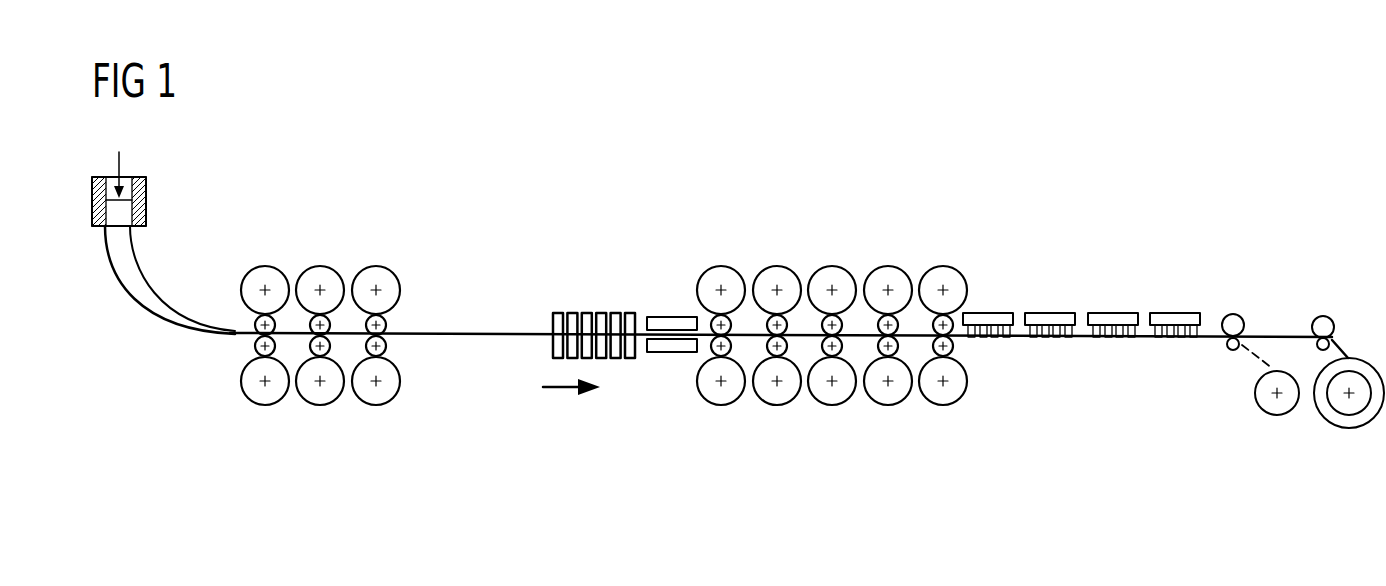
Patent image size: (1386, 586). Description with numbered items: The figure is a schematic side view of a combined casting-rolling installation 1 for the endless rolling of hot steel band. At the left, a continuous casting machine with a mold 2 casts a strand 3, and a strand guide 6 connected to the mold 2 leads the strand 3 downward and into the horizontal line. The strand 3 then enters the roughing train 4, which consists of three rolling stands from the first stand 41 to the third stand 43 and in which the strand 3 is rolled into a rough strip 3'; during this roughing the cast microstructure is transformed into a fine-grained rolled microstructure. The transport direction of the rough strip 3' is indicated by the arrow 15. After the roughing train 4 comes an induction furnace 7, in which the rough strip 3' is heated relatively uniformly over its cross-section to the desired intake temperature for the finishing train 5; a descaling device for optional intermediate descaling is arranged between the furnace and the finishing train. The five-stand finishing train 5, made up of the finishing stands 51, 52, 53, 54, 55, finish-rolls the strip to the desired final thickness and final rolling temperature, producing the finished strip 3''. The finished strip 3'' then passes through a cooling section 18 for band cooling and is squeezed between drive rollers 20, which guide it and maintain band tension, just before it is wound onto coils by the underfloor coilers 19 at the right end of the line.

The combined casting-rolling installation 1 is at (550, 170).
The mold 2 is at (153, 200).
The strand 3 is at (718, 281).
The rough strip 3' is at (471, 375).
The finished strip 3'' is at (982, 385).
The roughing train 4 is at (332, 245).
The first rolling stand of the roughing train 41 is at (268, 397).
The third rolling stand of the roughing train 43 is at (379, 397).
The finishing train 5 is at (845, 233).
The first finishing stand 51 is at (724, 397).
The second finishing stand 52 is at (780, 397).
The third finishing stand 53 is at (835, 397).
The fourth finishing stand 54 is at (891, 397).
The fifth finishing stand 55 is at (946, 397).
The strand guide 6 is at (192, 310).
The induction furnace 7 is at (597, 290).
The arrow 15 is at (555, 390).
The cooling section 18 is at (1052, 313).
The underfloor coilers 19 is at (1332, 420).
The drive rollers 20 is at (1233, 312).